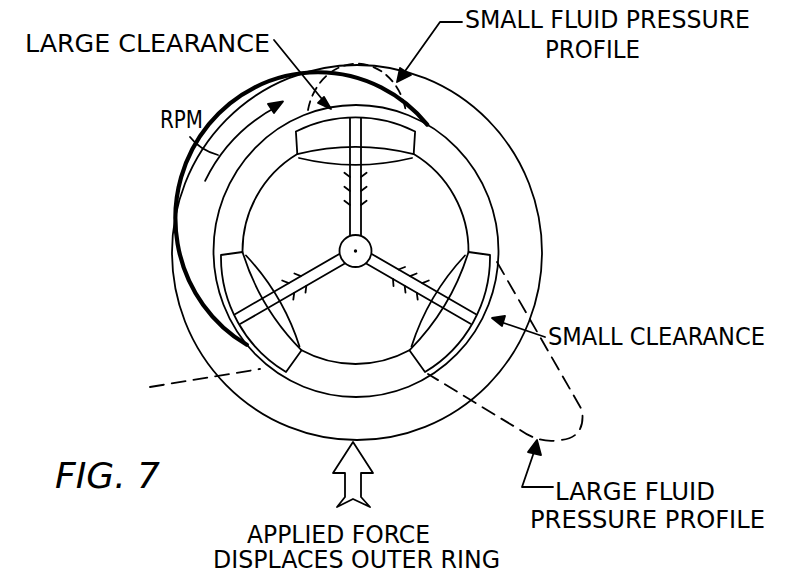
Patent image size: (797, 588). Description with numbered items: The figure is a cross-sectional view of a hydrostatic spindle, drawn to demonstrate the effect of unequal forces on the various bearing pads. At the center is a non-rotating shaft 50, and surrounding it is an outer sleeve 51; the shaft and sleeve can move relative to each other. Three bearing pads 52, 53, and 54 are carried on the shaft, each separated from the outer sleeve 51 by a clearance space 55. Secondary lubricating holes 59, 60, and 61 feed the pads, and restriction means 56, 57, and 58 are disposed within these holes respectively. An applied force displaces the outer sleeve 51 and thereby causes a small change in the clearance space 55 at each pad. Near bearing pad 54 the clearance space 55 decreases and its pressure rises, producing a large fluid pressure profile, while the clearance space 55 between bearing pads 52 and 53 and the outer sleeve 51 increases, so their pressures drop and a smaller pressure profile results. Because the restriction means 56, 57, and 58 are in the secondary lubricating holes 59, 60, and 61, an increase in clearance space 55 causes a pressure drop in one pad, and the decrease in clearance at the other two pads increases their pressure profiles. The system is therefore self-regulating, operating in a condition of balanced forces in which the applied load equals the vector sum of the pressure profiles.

The non-rotating shaft 50 is at (308, 230).
The outer sleeve 51 is at (524, 222).
The bearing pad 52 is at (243, 283).
The bearing pad 53 is at (409, 135).
The bearing pad 54 is at (472, 287).
The clearance space 55 is at (378, 125).
The restriction means 56 is at (320, 276).
The restriction means 57 is at (362, 206).
The restriction means 58 is at (403, 273).
The secondary lubricating hole 59 is at (293, 282).
The secondary lubricating hole 60 is at (349, 180).
The secondary lubricating hole 61 is at (423, 290).